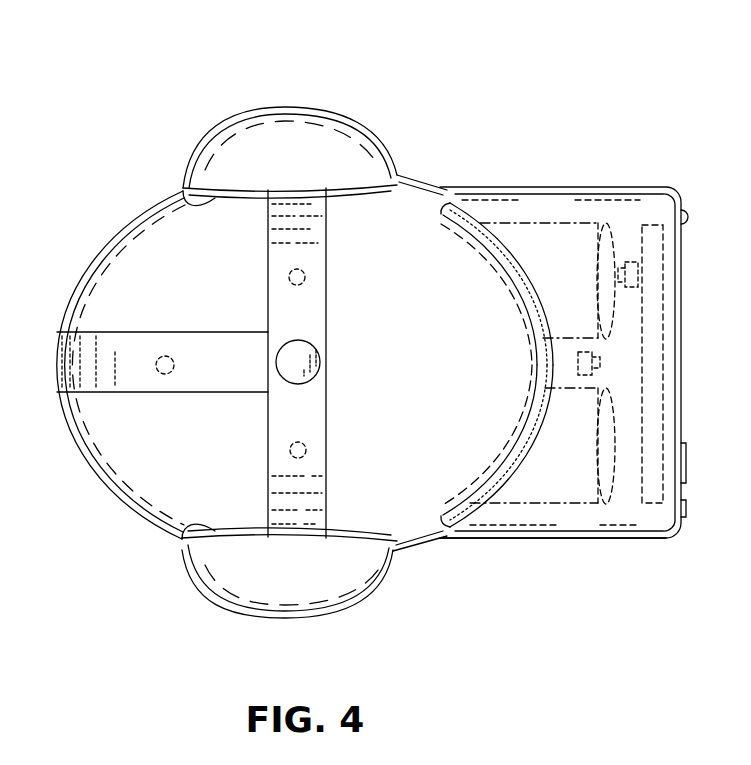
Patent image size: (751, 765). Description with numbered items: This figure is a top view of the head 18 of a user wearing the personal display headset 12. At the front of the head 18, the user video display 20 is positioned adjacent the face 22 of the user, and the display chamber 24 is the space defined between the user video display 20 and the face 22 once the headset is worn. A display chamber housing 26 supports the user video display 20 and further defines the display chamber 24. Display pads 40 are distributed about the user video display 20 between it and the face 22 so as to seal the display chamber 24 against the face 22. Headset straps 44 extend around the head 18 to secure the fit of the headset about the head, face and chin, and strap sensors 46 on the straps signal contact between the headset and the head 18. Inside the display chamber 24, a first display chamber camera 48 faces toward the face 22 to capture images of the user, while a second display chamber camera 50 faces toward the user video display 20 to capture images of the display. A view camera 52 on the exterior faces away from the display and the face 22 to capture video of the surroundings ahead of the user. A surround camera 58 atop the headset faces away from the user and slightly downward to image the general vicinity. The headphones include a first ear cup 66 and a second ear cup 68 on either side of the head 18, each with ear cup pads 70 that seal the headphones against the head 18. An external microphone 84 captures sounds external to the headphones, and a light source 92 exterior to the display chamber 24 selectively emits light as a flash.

The personal display headset 12 is at (565, 186).
The head 18 is at (155, 240).
The user video display 20 is at (657, 343).
The face 22 is at (489, 450).
The display chamber 24 is at (568, 262).
The display chamber housing 26 is at (592, 540).
The display pads 40 is at (497, 232).
The headset straps 44 is at (410, 180).
The strap sensors 46 is at (157, 358).
The first display chamber camera 48 is at (636, 273).
The second display chamber camera 50 is at (592, 375).
The view camera 52 is at (687, 461).
The surround camera 58 is at (313, 348).
The first ear cup 66 is at (287, 112).
The second ear cup 68 is at (284, 619).
The ear cup pads 70 is at (192, 200).
The external microphone 84 is at (687, 217).
The light source 92 is at (687, 512).